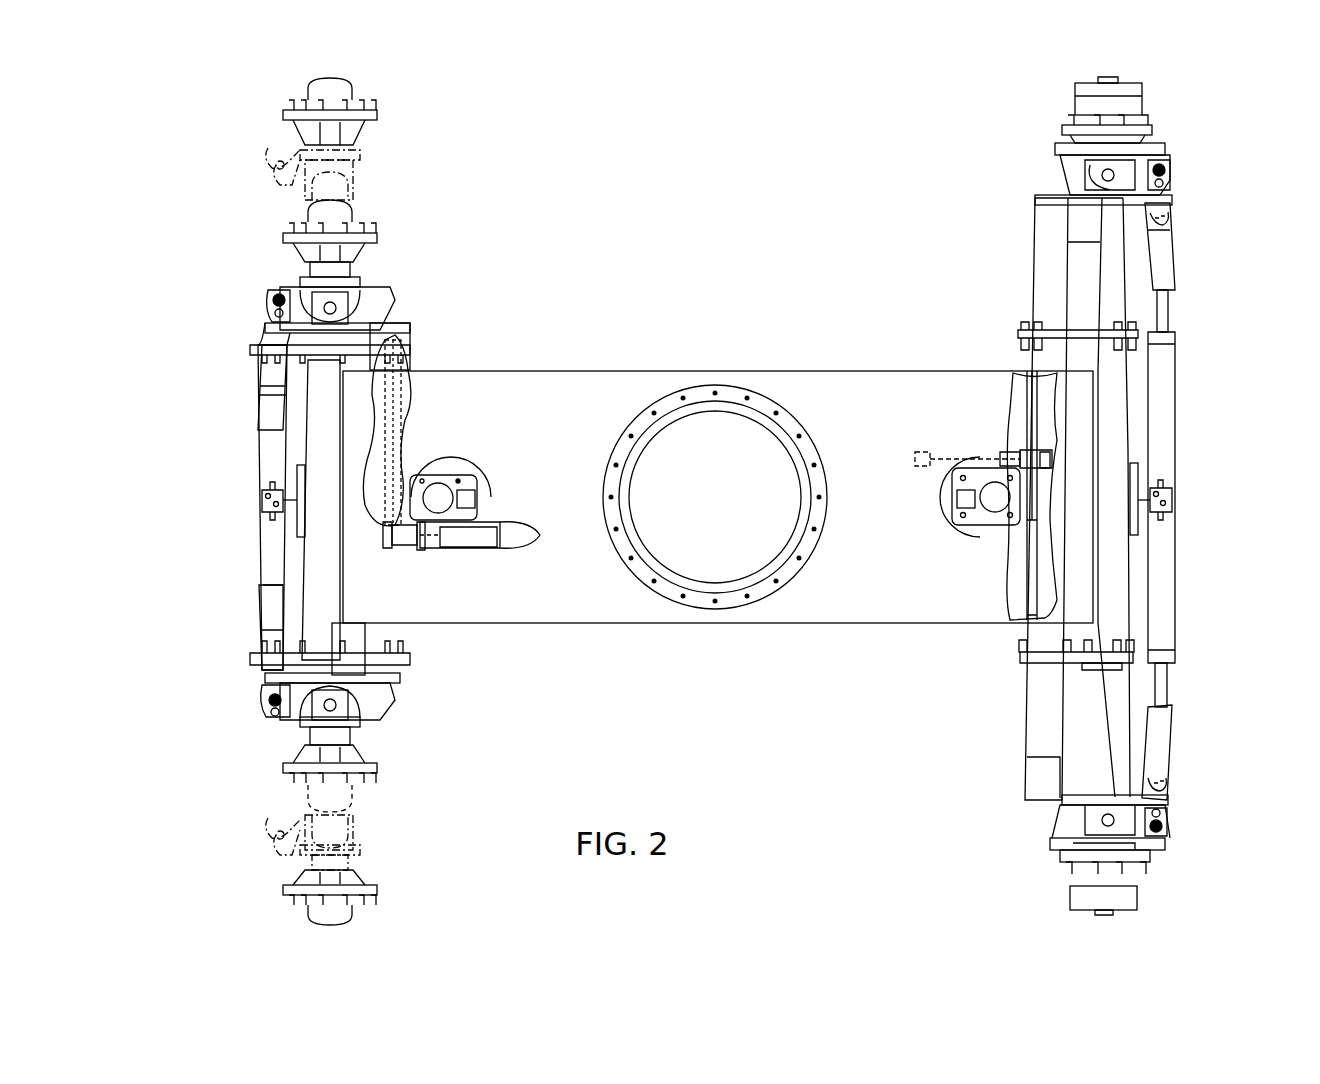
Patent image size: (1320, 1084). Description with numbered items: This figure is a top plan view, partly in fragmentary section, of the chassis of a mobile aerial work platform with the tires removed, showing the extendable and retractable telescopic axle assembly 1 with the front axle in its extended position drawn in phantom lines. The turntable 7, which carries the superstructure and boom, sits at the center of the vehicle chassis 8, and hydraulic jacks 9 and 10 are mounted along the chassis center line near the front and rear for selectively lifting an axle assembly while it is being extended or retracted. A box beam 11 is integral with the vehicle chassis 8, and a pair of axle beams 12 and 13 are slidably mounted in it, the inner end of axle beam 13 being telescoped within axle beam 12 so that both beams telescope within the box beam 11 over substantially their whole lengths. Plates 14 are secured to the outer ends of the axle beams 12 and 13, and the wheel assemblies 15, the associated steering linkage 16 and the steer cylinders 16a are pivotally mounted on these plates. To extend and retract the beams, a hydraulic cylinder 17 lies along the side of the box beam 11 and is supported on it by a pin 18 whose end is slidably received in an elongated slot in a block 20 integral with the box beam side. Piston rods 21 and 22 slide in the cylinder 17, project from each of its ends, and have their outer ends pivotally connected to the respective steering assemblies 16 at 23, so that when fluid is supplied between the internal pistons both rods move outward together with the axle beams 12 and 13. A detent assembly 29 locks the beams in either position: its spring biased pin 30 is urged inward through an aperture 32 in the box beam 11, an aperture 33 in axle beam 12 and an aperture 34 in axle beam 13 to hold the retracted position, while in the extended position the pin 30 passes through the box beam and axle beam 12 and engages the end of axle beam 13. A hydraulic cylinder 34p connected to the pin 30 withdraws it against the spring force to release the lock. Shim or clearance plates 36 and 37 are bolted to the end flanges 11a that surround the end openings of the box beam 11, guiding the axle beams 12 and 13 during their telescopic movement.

The telescopic axle assembly 1 is at (268, 196).
The turntable 7 is at (826, 462).
The vehicle chassis 8 is at (640, 378).
The hydraulic jack 9 is at (990, 515).
The hydraulic jack 10 is at (480, 490).
The box beam 11 is at (311, 508).
The end flange 11a is at (1020, 345).
The axle beam 12 is at (386, 456).
The axle beam 13 is at (380, 515).
The plate 14 is at (1172, 200).
The wheel assembly 15 is at (386, 242).
The steering linkage 16 is at (345, 176).
The steer cylinder 16a is at (275, 370).
The hydraulic cylinder 17 is at (268, 445).
The pin 18 is at (278, 520).
The block 20 is at (296, 540).
The piston rod 21 is at (1167, 313).
The piston rod 22 is at (1167, 681).
The pivotal connection 23 is at (268, 300).
The detent assembly 29 is at (460, 562).
The spring biased pin 30 is at (432, 548).
The aperture 32 is at (406, 547).
The aperture 33 is at (392, 548).
The aperture 34 is at (392, 535).
The hydraulic cylinder 34p is at (475, 540).
The shim or clearance plate 36 is at (1105, 333).
The shim or clearance plate 37 is at (1106, 668).